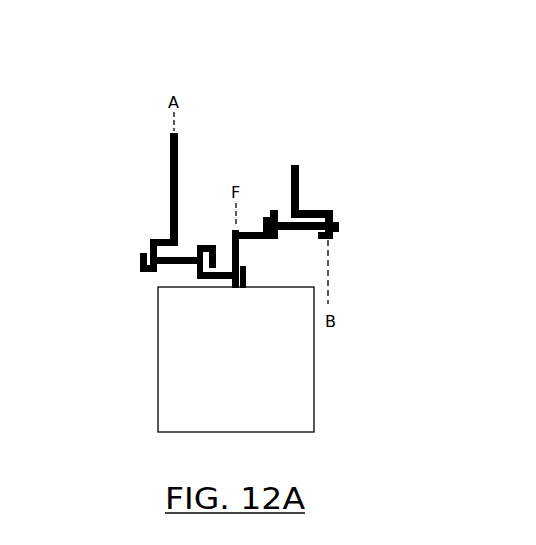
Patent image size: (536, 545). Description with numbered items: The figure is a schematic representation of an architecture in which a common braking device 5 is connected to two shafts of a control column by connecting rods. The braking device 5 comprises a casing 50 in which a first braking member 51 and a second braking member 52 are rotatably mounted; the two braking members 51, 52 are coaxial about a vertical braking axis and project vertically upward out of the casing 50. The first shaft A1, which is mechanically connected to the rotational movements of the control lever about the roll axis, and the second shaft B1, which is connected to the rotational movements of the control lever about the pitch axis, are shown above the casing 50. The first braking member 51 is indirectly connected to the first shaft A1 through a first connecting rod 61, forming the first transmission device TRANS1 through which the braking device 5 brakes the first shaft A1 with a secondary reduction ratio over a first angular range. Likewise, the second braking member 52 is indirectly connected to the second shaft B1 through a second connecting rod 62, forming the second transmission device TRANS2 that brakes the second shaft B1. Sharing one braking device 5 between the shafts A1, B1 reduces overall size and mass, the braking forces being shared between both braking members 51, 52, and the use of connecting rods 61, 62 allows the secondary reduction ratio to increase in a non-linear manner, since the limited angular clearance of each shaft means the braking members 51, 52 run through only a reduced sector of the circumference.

The braking device 5 is at (270, 359).
The casing 50 is at (314, 360).
The first braking member 51 is at (214, 241).
The second braking member 52 is at (272, 212).
The first connecting rod 61 is at (187, 256).
The second connecting rod 62 is at (299, 231).
The first shaft A1 is at (170, 222).
The second shaft B1 is at (322, 185).
The first transmission device TRANS1 is at (135, 247).
The second transmission device TRANS2 is at (337, 234).